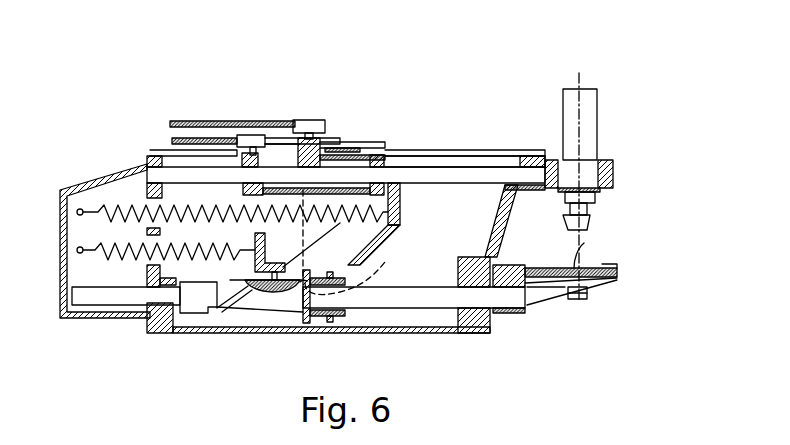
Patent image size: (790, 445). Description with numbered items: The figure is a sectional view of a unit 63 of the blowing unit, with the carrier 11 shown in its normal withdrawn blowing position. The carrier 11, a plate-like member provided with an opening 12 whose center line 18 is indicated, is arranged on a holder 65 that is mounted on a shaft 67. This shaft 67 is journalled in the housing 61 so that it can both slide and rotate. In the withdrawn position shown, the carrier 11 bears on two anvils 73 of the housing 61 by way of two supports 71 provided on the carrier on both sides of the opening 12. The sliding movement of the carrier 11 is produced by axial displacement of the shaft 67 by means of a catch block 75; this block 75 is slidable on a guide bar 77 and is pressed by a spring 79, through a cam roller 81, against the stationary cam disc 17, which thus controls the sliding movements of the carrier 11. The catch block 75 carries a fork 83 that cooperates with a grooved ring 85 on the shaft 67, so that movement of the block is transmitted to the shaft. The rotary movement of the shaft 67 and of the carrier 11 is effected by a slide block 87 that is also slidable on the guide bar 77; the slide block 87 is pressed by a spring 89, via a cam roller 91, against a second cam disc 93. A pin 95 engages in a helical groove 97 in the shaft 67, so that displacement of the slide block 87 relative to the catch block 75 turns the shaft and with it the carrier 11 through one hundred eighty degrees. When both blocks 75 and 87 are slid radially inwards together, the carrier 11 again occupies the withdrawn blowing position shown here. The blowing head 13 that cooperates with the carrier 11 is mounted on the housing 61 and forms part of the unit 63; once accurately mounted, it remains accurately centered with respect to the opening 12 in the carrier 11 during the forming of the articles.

The carrier 11 is at (612, 268).
The opening 12 is at (580, 266).
The blowing head 13 is at (597, 117).
The stationary cam disc 17 is at (190, 121).
The center line 18 is at (583, 243).
The housing 61 is at (500, 228).
The unit 63 is at (433, 133).
The holder 65 is at (507, 313).
The shaft 67 is at (427, 290).
The supports 71 is at (593, 290).
The anvils 73 is at (556, 315).
The catch block 75 is at (400, 215).
The guide bar 77 is at (493, 180).
The spring 79 is at (108, 208).
The cam roller 81 is at (325, 127).
The fork 83 is at (350, 242).
The grooved ring 85 is at (330, 322).
The slide block 87 is at (243, 190).
The spring 89 is at (125, 263).
The cam roller 91 is at (270, 140).
The second cam disc 93 is at (172, 140).
The pin 95 is at (273, 295).
The helical groove 97 is at (205, 315).